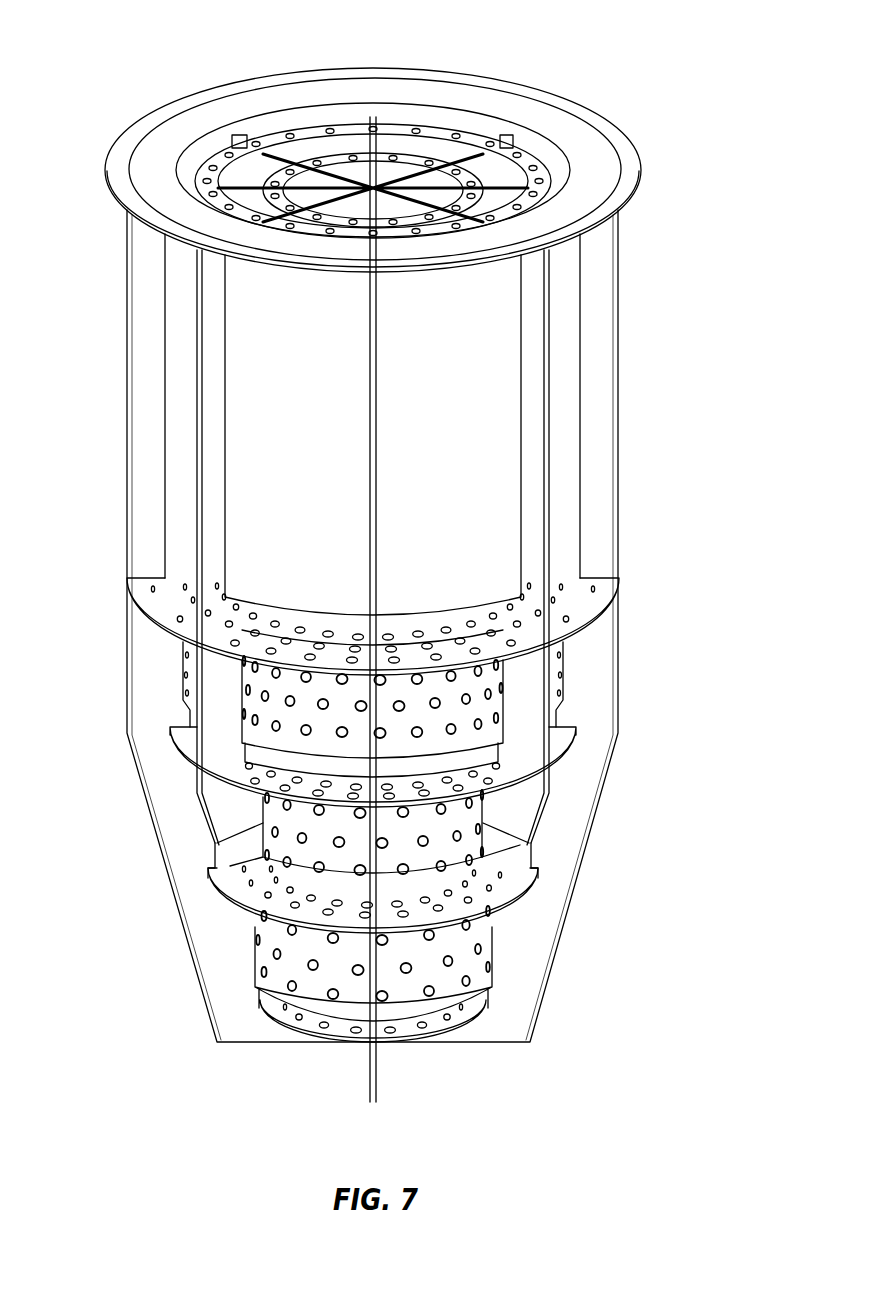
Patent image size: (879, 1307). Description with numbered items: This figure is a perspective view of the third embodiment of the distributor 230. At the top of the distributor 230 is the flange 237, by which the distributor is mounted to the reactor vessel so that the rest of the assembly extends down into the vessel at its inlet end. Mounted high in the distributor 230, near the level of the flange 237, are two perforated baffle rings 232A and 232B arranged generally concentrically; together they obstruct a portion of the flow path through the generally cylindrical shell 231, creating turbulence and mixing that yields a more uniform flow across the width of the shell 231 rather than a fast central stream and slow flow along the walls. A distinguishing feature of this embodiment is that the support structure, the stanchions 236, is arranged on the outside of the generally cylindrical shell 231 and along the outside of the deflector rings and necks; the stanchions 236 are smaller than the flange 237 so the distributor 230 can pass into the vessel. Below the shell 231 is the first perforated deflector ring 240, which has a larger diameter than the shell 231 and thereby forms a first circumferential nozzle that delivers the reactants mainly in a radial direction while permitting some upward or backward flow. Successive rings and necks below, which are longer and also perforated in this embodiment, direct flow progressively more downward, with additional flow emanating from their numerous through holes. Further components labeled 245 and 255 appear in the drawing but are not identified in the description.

The distributor 230 is at (243, 383).
The generally cylindrical shell 231 is at (373, 435).
The baffle ring 232A is at (465, 132).
The baffle ring 232B is at (288, 168).
The stanchions 236 is at (612, 495).
The flange 237 is at (627, 160).
The first perforated deflector ring 240 is at (597, 595).
The perforated cylinder 245 is at (290, 712).
The perforated openings 255 is at (257, 848).